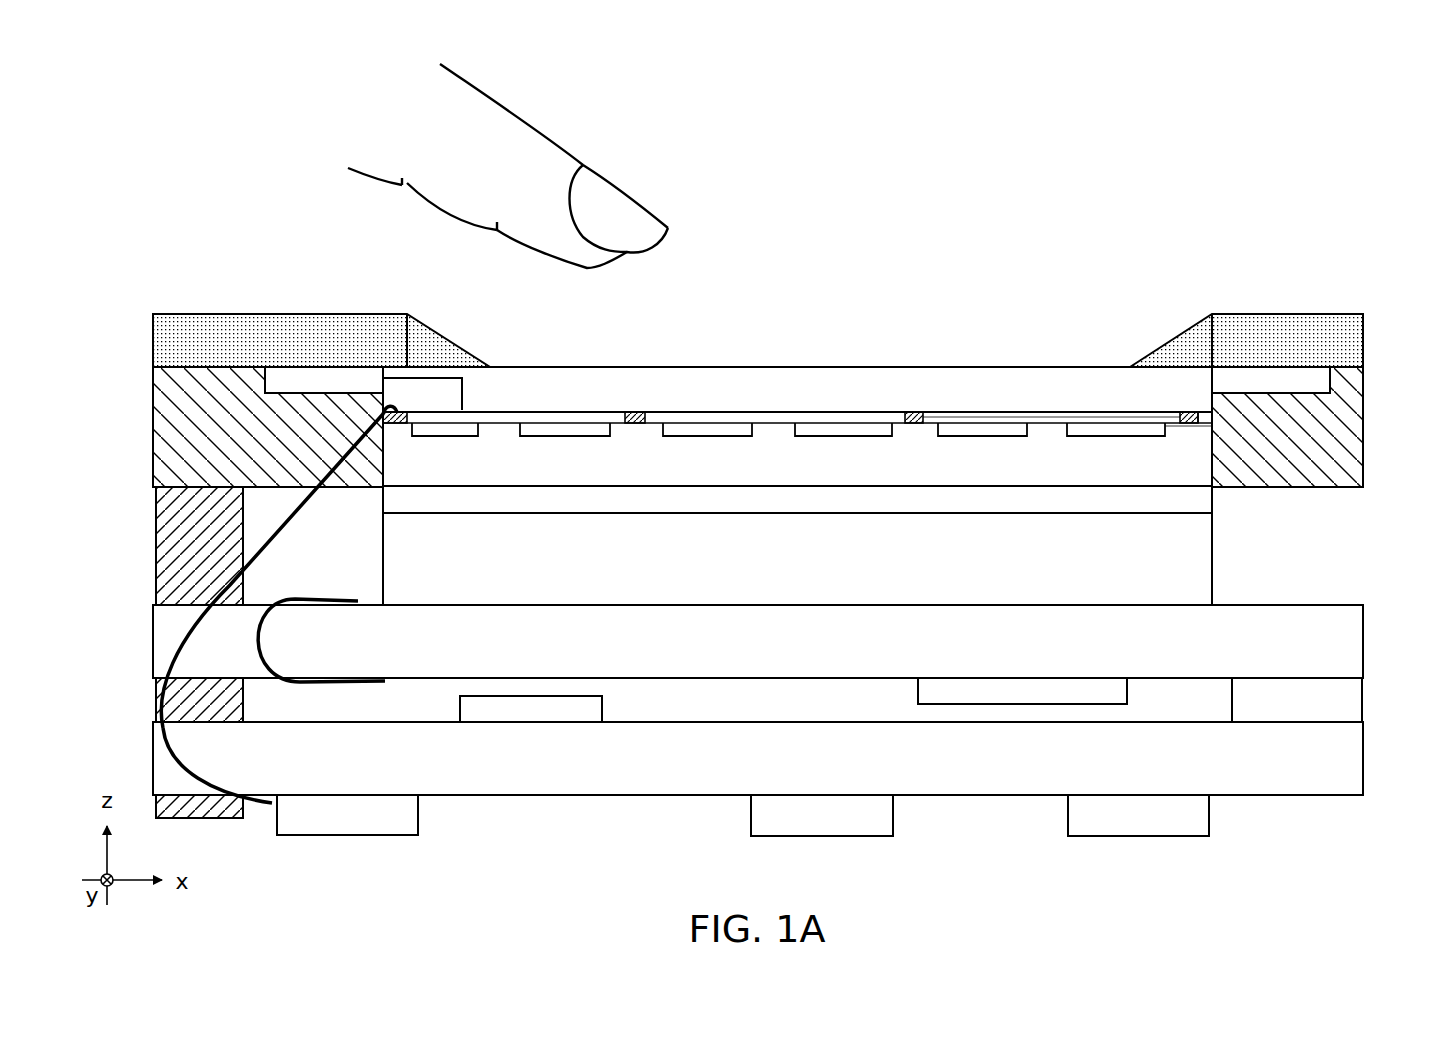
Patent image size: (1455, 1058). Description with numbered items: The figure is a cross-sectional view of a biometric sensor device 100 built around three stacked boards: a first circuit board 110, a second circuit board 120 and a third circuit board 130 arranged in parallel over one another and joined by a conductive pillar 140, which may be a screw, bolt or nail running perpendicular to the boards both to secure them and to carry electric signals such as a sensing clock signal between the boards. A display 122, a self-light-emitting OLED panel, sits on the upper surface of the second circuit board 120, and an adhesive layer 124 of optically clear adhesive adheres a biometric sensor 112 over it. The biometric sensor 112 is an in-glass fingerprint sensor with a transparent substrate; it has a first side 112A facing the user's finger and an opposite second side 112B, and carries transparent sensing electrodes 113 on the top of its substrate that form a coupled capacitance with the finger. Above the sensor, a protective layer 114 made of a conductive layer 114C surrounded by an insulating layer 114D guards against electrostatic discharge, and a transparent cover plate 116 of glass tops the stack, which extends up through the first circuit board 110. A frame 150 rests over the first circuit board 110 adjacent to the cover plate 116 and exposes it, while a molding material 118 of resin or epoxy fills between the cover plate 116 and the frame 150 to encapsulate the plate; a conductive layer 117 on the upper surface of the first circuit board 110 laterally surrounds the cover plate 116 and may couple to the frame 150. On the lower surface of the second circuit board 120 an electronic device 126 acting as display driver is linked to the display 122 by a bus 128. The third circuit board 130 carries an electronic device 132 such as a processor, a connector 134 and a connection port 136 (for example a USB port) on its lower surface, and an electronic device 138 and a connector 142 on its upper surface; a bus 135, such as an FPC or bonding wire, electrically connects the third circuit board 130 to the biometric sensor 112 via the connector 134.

The biometric sensor device 100 is at (1367, 206).
The first circuit board 110 is at (231, 449).
The biometric sensor 112 is at (797, 456).
The first side 112A is at (1168, 438).
The second side 112B is at (918, 482).
The sensing electrodes 113 is at (693, 428).
The protective layer 114 is at (818, 343).
The conductive layer 114C is at (914, 402).
The insulating layer 114D is at (998, 408).
The cover plate 116 is at (801, 403).
The conductive layer 117 is at (318, 382).
The molding material 118 is at (430, 393).
The second circuit board 120 is at (801, 656).
The display 122 is at (801, 573).
The adhesive layer 124 is at (767, 500).
The electronic device 126 is at (1001, 690).
The bus 128 is at (323, 683).
The third circuit board 130 is at (801, 775).
The electronic device 132 is at (801, 826).
The connector 134 is at (326, 826).
The bus 135 is at (283, 527).
The connection port 136 is at (1119, 826).
The electronic device 138 is at (530, 708).
The conductive pillar 140 is at (166, 543).
The connector 142 is at (1274, 713).
The frame 150 is at (1365, 340).